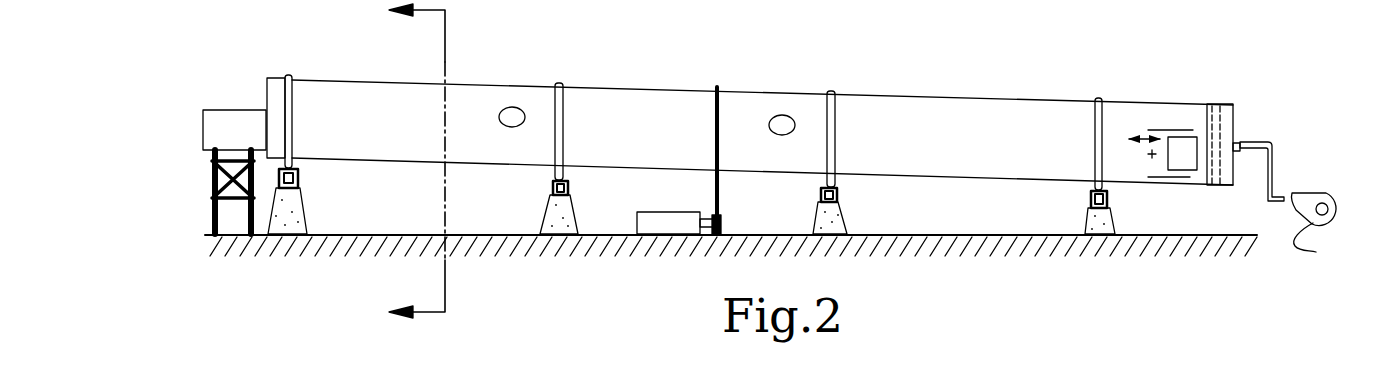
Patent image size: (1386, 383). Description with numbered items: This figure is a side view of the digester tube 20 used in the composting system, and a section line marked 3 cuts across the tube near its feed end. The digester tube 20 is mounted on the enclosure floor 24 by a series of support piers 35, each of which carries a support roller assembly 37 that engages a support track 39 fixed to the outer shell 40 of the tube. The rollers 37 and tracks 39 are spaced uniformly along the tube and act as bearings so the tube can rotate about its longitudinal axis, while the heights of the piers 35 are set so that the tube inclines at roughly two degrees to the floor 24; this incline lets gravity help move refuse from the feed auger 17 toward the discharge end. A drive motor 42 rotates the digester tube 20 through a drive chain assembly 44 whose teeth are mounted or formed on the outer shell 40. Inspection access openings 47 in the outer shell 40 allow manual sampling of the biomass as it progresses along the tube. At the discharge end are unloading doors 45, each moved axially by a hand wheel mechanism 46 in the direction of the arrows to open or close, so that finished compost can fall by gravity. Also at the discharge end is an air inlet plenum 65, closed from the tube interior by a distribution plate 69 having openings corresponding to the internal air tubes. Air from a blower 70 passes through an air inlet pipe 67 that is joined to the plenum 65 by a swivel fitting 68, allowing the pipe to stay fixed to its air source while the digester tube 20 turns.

The section line 3- 3 is at (407, 164).
The feed auger 17 is at (226, 108).
The digester tube 20 is at (750, 103).
The enclosure floor 24 is at (1255, 237).
The support piers 35 is at (311, 214).
The support roller assembly 37 is at (304, 176).
The support track 39 is at (293, 133).
The outer shell 40 is at (423, 83).
The drive motor 42 is at (634, 228).
The drive chain assembly 44 is at (722, 154).
The unloading doors 45 is at (1178, 142).
The hand wheel mechanism 46 is at (1160, 152).
The inspection access openings 47 is at (519, 112).
The air inlet plenum 65 is at (1224, 106).
The air inlet pipe 67 is at (1260, 142).
The swivel fitting 68 is at (1238, 152).
The distribution plate 69 is at (1210, 106).
The blower 70 is at (1315, 230).